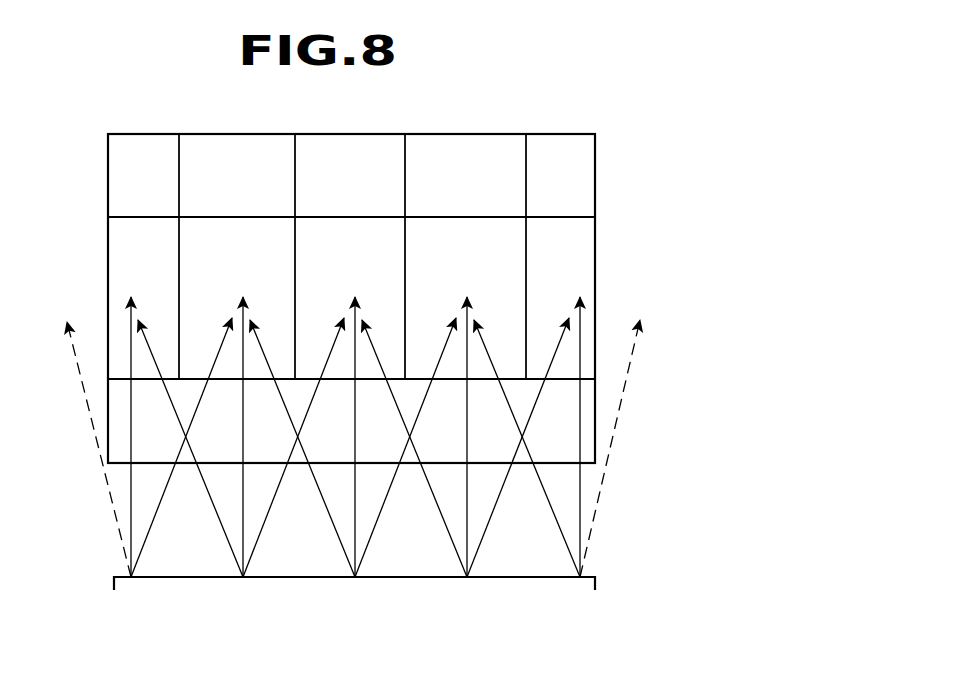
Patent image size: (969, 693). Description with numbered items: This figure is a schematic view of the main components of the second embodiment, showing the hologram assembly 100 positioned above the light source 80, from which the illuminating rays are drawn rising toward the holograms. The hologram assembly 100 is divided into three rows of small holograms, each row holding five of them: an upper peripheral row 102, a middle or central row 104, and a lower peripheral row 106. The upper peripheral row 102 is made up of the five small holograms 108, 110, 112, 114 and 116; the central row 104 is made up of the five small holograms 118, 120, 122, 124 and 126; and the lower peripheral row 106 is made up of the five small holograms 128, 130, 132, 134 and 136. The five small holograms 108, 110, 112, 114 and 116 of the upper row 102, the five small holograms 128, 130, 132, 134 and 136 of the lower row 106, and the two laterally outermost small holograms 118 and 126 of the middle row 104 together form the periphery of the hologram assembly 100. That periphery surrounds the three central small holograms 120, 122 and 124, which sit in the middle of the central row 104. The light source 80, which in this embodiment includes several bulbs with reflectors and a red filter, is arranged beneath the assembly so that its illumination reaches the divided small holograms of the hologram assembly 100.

The light source 80 is at (600, 567).
The hologram assembly 100 is at (571, 134).
The upper peripheral row 102 is at (108, 183).
The middle or central row 104 is at (108, 288).
The lower peripheral row 106 is at (108, 428).
The small hologram 108 is at (165, 201).
The small hologram 110 is at (262, 201).
The small hologram 112 is at (375, 201).
The small hologram 114 is at (493, 201).
The small hologram 116 is at (584, 201).
The small hologram 118 is at (165, 284).
The small hologram 120 is at (262, 284).
The small hologram 122 is at (375, 284).
The small hologram 124 is at (493, 284).
The small hologram 126 is at (584, 284).
The small hologram 128 is at (155, 434).
The small hologram 130 is at (241, 449).
The small hologram 132 is at (352, 449).
The small hologram 134 is at (462, 449).
The small hologram 136 is at (553, 432).